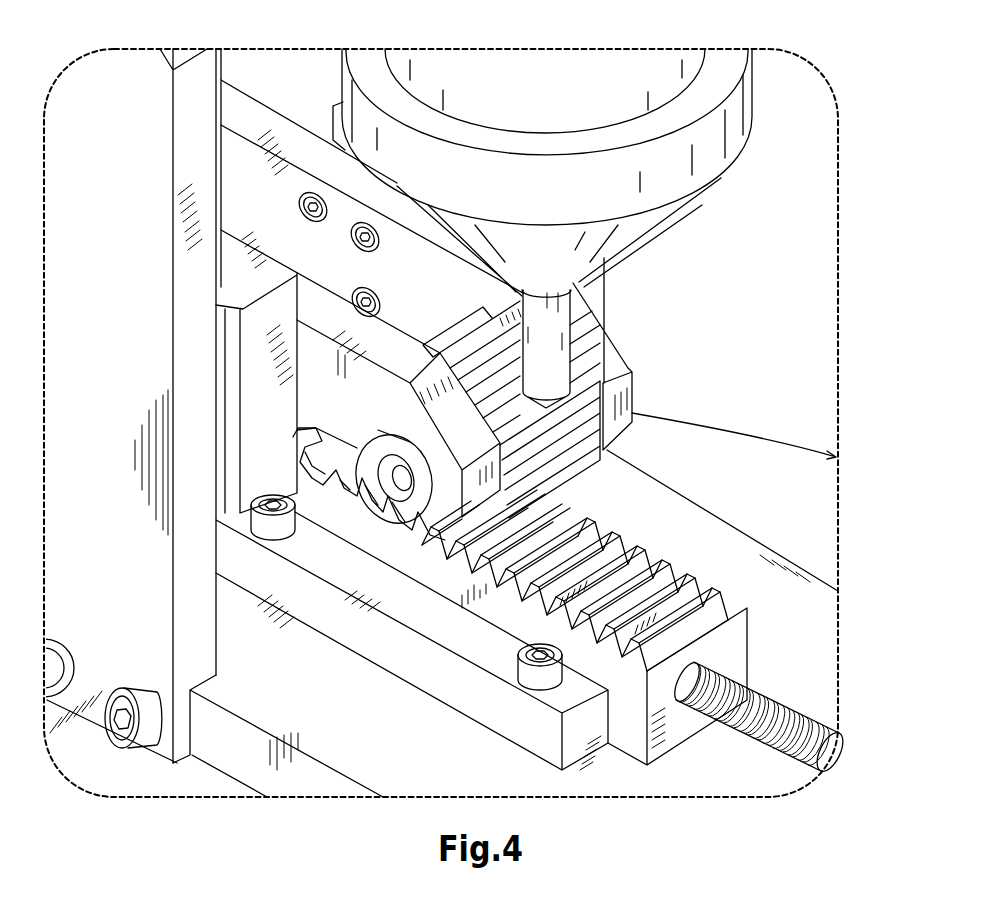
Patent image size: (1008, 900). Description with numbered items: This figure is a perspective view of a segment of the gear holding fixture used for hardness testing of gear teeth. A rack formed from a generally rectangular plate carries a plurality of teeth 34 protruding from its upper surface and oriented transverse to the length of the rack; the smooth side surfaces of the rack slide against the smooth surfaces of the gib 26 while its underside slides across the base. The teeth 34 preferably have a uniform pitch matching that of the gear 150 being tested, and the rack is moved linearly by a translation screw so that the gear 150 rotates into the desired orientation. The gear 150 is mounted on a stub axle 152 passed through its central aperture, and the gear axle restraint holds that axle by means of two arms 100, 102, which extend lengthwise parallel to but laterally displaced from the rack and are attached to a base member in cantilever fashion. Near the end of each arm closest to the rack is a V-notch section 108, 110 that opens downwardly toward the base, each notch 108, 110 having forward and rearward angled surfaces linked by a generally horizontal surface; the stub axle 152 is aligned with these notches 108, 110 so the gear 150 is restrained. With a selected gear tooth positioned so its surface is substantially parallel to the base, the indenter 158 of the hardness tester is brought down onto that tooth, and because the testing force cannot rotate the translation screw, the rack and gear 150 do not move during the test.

The gib 26 is at (390, 640).
The teeth 34 is at (690, 592).
The arm 100 is at (327, 317).
The arm 102 is at (260, 112).
The V-notch section 108 is at (383, 495).
The V-notch section 110 is at (575, 378).
The gear 150 is at (455, 517).
The stub axle 152 is at (398, 497).
The indenter 158 is at (560, 340).